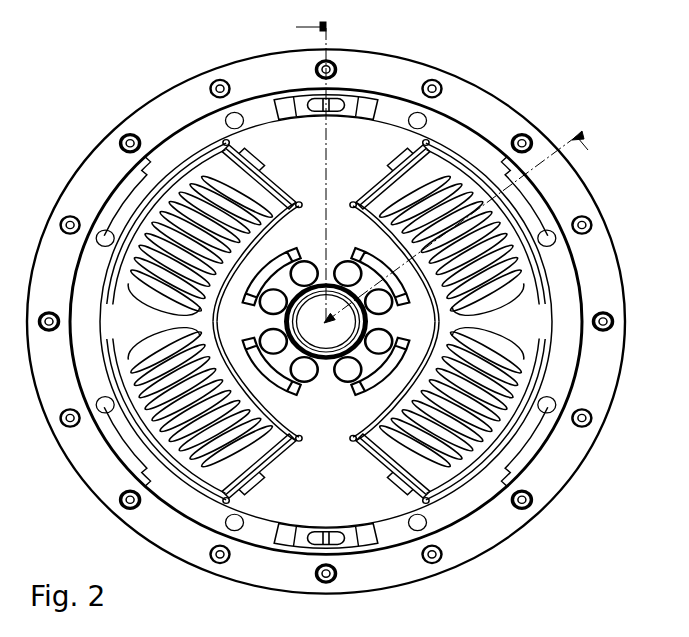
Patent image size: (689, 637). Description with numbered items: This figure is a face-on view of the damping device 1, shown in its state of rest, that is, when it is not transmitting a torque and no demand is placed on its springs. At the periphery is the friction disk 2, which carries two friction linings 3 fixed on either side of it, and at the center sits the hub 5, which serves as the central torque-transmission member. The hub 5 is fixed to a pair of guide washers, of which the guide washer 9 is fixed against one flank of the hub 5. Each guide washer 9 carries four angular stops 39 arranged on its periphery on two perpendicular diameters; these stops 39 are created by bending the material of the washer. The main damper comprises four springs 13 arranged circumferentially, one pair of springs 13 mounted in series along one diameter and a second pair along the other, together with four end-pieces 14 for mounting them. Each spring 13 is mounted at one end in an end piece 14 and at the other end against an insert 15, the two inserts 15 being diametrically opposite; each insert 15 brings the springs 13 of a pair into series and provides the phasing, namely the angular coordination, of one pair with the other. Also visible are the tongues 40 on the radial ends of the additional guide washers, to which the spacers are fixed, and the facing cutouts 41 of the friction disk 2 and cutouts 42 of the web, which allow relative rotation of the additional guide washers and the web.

The damping device 1 is at (512, 84).
The friction disk 2 is at (455, 90).
The friction linings 3 is at (603, 263).
The hub 5 is at (326, 365).
The guide washer 9 is at (275, 130).
The springs 13 is at (207, 200).
The end-pieces 14 is at (238, 162).
The inserts 15 is at (140, 286).
The angular stops 39 is at (130, 196).
The tongues 40 is at (338, 100).
The cutouts 41 is at (365, 103).
The cutouts 42 is at (403, 315).